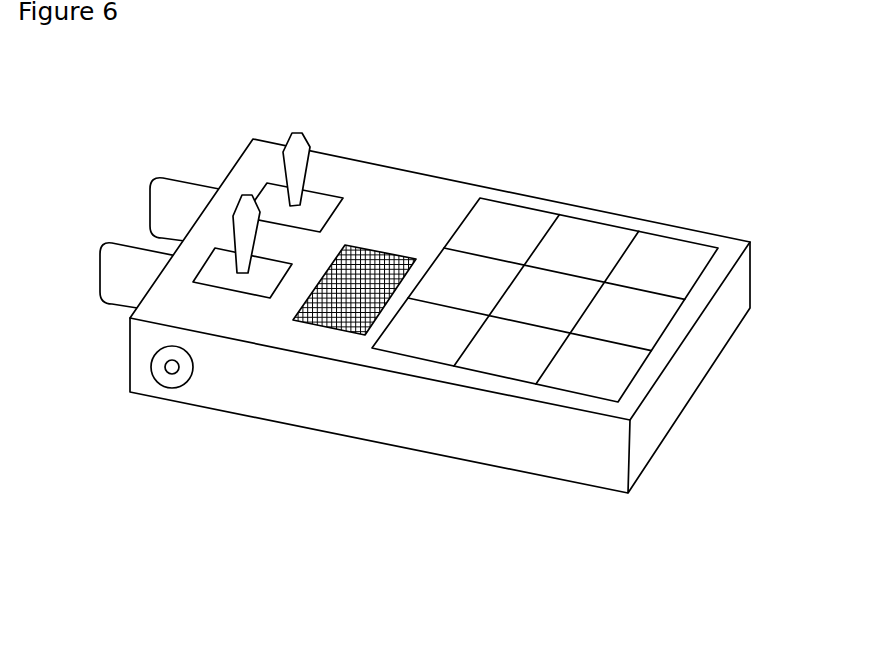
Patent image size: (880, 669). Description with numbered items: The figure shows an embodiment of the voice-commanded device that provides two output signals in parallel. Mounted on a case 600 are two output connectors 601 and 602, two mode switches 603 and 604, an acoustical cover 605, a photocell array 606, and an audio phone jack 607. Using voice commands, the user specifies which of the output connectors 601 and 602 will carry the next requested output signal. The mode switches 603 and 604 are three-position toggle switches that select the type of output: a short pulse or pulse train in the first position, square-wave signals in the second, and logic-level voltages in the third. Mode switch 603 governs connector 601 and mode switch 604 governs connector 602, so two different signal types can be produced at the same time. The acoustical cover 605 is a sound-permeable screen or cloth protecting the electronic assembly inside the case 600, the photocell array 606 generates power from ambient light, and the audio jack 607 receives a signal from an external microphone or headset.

The case 600 is at (129, 360).
The output connector 601 is at (118, 242).
The output connector 602 is at (156, 183).
The mode switch 603 is at (243, 196).
The mode switch 604 is at (296, 132).
The acoustical cover 605 is at (370, 247).
The photocell array 606 is at (650, 232).
The audio phone jack 607 is at (178, 388).